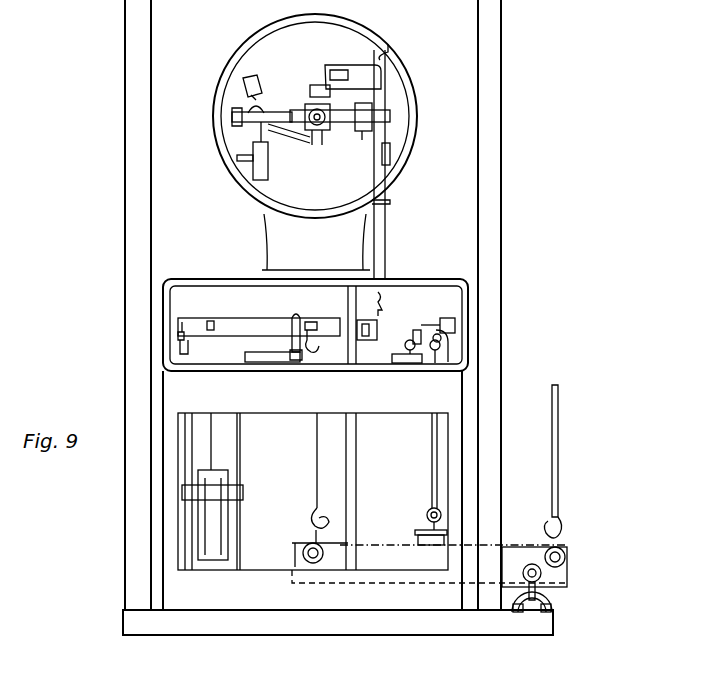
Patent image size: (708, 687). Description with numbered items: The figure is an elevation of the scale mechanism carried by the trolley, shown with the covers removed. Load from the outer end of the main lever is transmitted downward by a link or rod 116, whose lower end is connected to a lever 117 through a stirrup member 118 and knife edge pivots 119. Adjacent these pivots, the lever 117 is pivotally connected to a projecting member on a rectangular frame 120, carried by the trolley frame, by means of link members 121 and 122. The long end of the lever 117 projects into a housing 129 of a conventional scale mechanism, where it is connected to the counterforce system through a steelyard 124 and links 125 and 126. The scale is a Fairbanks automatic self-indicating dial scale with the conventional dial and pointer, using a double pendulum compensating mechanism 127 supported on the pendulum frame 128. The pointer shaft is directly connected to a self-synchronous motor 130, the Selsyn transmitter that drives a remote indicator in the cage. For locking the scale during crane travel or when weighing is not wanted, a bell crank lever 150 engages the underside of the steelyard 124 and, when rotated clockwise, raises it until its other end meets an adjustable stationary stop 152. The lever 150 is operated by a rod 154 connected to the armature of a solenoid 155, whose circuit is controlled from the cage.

The link or rod 116 is at (558, 478).
The lever 117 is at (566, 574).
The stirrup member 118 is at (556, 533).
The knife edge pivots 119 is at (566, 556).
The rectangular frame 120 is at (478, 188).
The link member 121 is at (548, 598).
The link member 122 is at (540, 614).
The steelyard 124 is at (241, 318).
The link 125 is at (315, 465).
The link 126 is at (390, 155).
The double pendulum compensating mechanism 127 is at (341, 62).
The pendulum frame 128 is at (340, 118).
The housing 129 is at (338, 598).
The self-synchronous motor 130 is at (300, 114).
The lever 150 is at (454, 364).
The adjustable stationary stop 152 is at (192, 354).
The rod 154 is at (432, 448).
The solenoid 155 is at (416, 538).